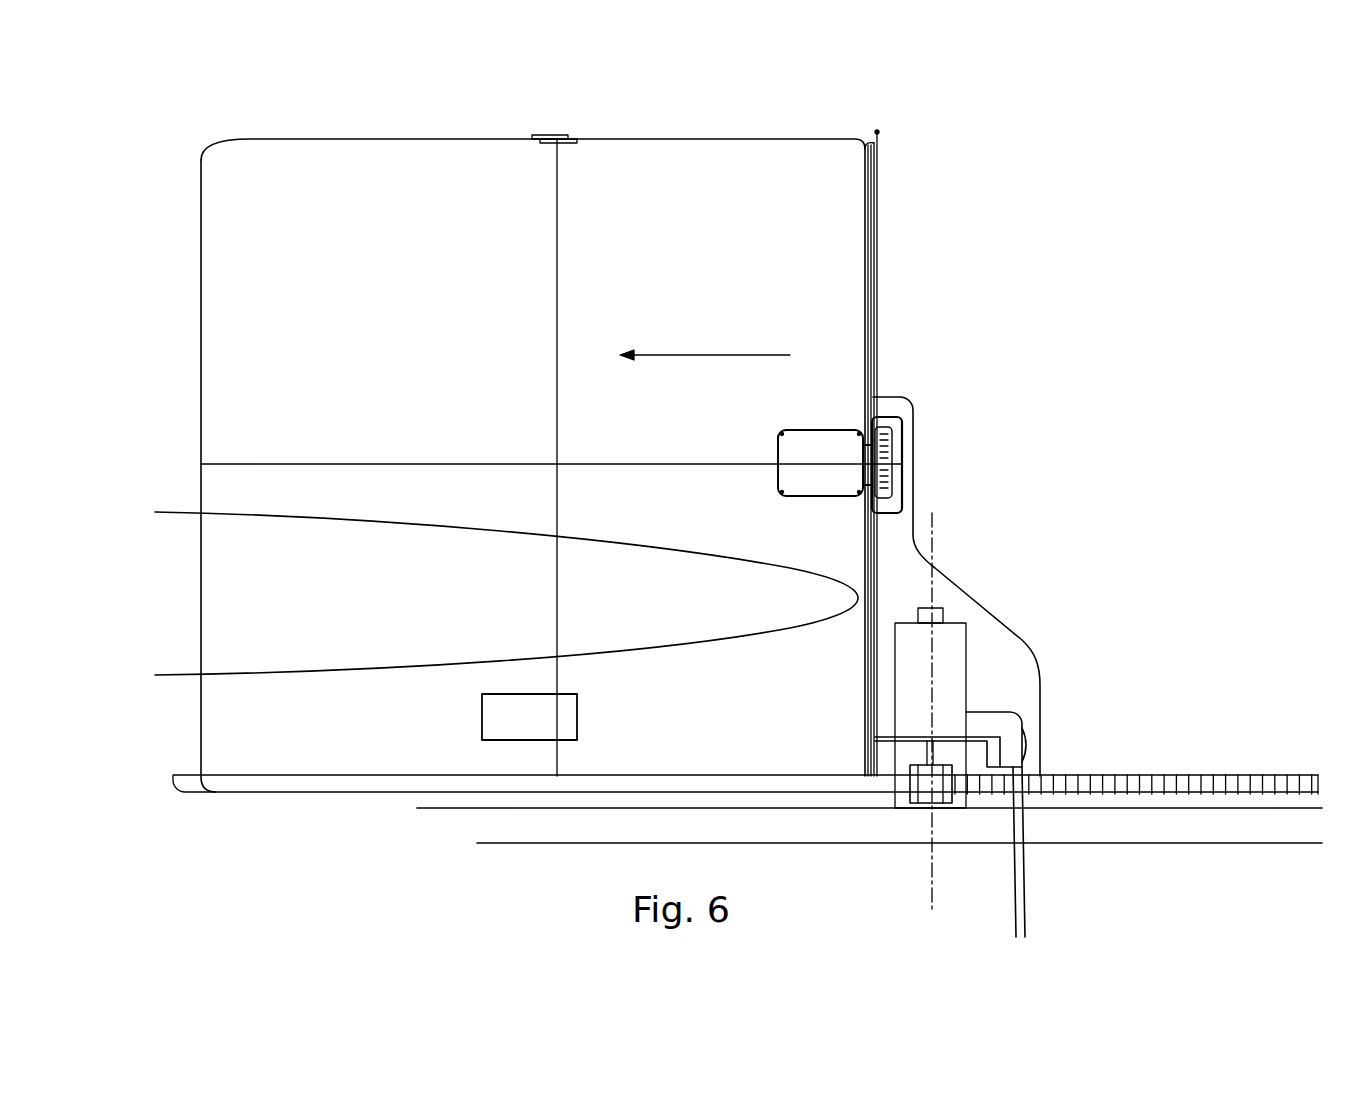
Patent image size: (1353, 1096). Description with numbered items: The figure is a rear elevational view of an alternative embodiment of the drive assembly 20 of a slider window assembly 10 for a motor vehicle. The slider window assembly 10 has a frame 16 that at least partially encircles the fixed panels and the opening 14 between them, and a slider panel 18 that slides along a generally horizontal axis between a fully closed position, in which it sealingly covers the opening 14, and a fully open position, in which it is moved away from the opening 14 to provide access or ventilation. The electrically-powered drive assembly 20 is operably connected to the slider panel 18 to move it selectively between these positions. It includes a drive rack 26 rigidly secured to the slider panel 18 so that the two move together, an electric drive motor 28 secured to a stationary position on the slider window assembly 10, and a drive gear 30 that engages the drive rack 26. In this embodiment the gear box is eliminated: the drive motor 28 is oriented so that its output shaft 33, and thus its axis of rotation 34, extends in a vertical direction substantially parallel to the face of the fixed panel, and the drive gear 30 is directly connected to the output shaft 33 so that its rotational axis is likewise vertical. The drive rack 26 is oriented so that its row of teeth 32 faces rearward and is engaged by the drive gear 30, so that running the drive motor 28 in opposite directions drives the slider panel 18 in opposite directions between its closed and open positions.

The slider window assembly 10 is at (1091, 323).
The opening 14 is at (875, 300).
The frame 16 is at (1238, 843).
The slider panel 18 is at (828, 207).
The drive assembly 20 is at (1000, 626).
The drive rack 26 is at (1168, 795).
The electric drive motor 28 is at (968, 672).
The drive gear 30 is at (940, 805).
The teeth 32 is at (1196, 775).
The output shaft 33 is at (927, 750).
The axis of rotation 34 is at (933, 562).